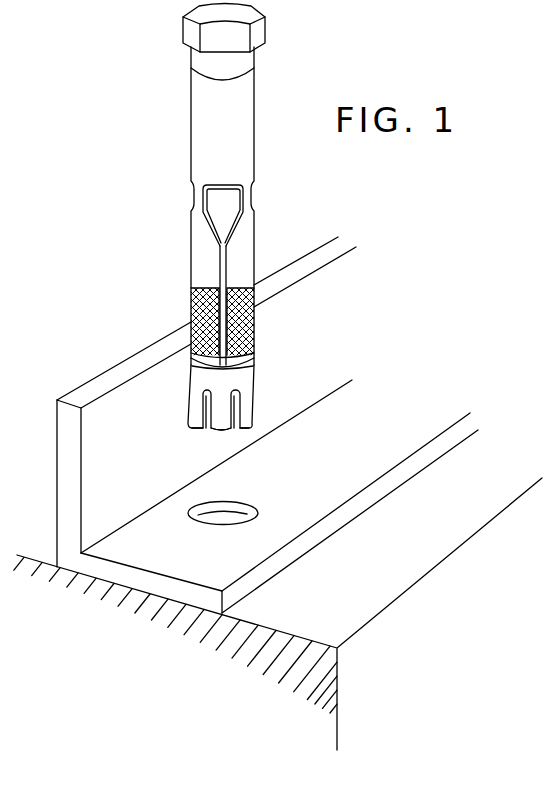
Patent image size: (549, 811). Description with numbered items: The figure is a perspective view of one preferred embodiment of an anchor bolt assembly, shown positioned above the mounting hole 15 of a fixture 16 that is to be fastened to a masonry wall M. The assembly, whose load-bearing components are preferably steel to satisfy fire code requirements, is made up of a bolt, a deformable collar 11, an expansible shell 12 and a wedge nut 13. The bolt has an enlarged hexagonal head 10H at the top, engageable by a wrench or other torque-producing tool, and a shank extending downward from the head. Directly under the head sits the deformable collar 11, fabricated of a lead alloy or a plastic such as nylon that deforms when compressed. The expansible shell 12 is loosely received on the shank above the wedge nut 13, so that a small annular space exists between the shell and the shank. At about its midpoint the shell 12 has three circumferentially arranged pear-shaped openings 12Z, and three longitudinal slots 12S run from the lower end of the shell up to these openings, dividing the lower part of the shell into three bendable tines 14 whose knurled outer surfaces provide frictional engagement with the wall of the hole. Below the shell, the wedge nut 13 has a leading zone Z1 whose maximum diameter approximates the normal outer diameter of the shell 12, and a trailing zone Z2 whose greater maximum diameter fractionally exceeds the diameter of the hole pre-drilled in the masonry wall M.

The hexagonal head 10H is at (262, 33).
The deformable collar 11 is at (253, 68).
The expansible shell 12 is at (191, 167).
The pear-shaped openings 12Z is at (233, 198).
The longitudinal slots 12S is at (223, 318).
The wedge nut 13 is at (250, 385).
The bendable tines 14 is at (190, 318).
The mounting hole 15 is at (247, 512).
The fixture 16 is at (80, 392).
The masonry wall M is at (328, 677).
The leading zone Z1 is at (203, 374).
The trailing zone Z2 is at (250, 426).